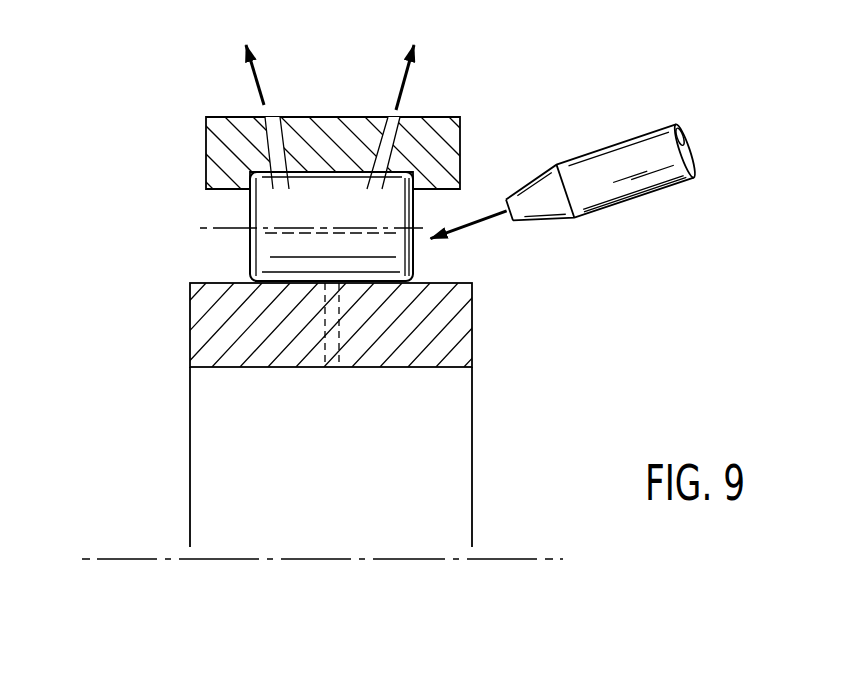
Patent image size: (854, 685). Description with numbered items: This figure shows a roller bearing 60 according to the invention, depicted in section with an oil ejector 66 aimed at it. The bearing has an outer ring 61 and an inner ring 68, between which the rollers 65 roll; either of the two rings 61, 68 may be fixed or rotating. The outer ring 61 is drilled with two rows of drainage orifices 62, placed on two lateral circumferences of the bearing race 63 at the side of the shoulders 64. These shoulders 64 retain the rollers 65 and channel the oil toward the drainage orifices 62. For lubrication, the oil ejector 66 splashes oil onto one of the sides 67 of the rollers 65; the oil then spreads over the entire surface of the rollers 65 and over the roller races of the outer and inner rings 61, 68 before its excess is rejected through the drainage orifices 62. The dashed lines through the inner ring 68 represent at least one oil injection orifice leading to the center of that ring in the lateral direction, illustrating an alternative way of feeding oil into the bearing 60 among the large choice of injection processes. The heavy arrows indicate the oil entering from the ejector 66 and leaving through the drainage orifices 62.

The bearing 60 is at (484, 80).
The outer ring 61 is at (201, 117).
The drainage orifices 62 is at (378, 158).
The bearing race 63 is at (306, 174).
The shoulders 64 is at (218, 193).
The rollers 65 is at (270, 244).
The oil ejector 66 is at (635, 177).
The side of the rollers 67 is at (420, 264).
The inner ring 68 is at (188, 335).